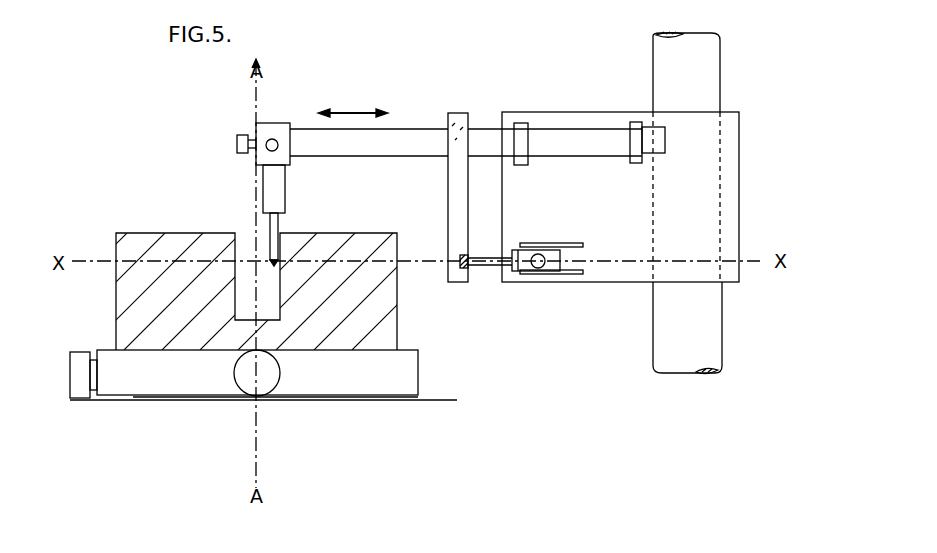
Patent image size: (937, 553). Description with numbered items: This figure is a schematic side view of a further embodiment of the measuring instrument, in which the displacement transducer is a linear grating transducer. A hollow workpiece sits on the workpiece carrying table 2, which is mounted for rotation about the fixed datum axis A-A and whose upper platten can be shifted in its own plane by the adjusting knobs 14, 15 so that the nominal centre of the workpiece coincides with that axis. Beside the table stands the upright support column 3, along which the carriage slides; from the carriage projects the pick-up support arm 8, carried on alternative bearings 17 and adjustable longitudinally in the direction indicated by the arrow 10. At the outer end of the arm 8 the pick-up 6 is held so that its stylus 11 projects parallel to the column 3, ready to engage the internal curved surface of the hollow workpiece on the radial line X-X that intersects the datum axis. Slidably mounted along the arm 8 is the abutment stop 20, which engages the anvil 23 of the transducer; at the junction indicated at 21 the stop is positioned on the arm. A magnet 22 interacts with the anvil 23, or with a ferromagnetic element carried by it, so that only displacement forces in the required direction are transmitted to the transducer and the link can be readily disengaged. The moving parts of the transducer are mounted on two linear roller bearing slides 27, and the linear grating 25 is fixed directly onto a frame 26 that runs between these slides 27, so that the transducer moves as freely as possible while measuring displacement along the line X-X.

The workpiece carrying table 2 is at (348, 378).
The upright support column 3 is at (707, 313).
The pick-up 6 is at (267, 202).
The pick-up support arm 8 is at (392, 145).
The direction of movement arrow 10 is at (351, 110).
The stylus 11 is at (727, 147).
The adjusting knob 14 is at (78, 358).
The adjusting knob 15 is at (262, 382).
The alternative bearings 17 is at (521, 150).
The abutment stop 20 is at (457, 198).
The joint 21 is at (468, 128).
The magnet 22 is at (463, 270).
The anvil 23 is at (473, 264).
The linear grating 25 is at (527, 272).
The frame 26 is at (563, 270).
The roller bearing slides 27 is at (583, 245).